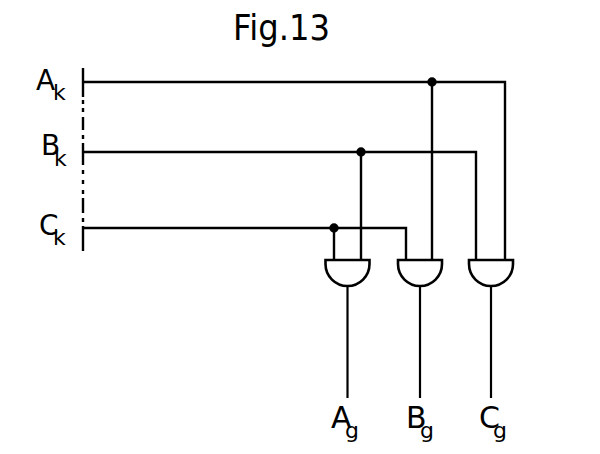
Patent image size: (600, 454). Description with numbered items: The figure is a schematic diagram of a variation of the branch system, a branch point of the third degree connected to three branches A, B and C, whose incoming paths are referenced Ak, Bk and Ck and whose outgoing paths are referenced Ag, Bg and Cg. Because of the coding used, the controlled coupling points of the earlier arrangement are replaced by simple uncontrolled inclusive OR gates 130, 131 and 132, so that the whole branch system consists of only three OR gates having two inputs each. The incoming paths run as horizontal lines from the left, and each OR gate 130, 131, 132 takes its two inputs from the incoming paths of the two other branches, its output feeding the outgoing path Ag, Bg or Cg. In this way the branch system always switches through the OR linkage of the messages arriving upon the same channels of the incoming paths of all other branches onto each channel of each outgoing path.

The OR gate 130 is at (341, 283).
The OR gate 131 is at (413, 283).
The OR gate 132 is at (489, 283).